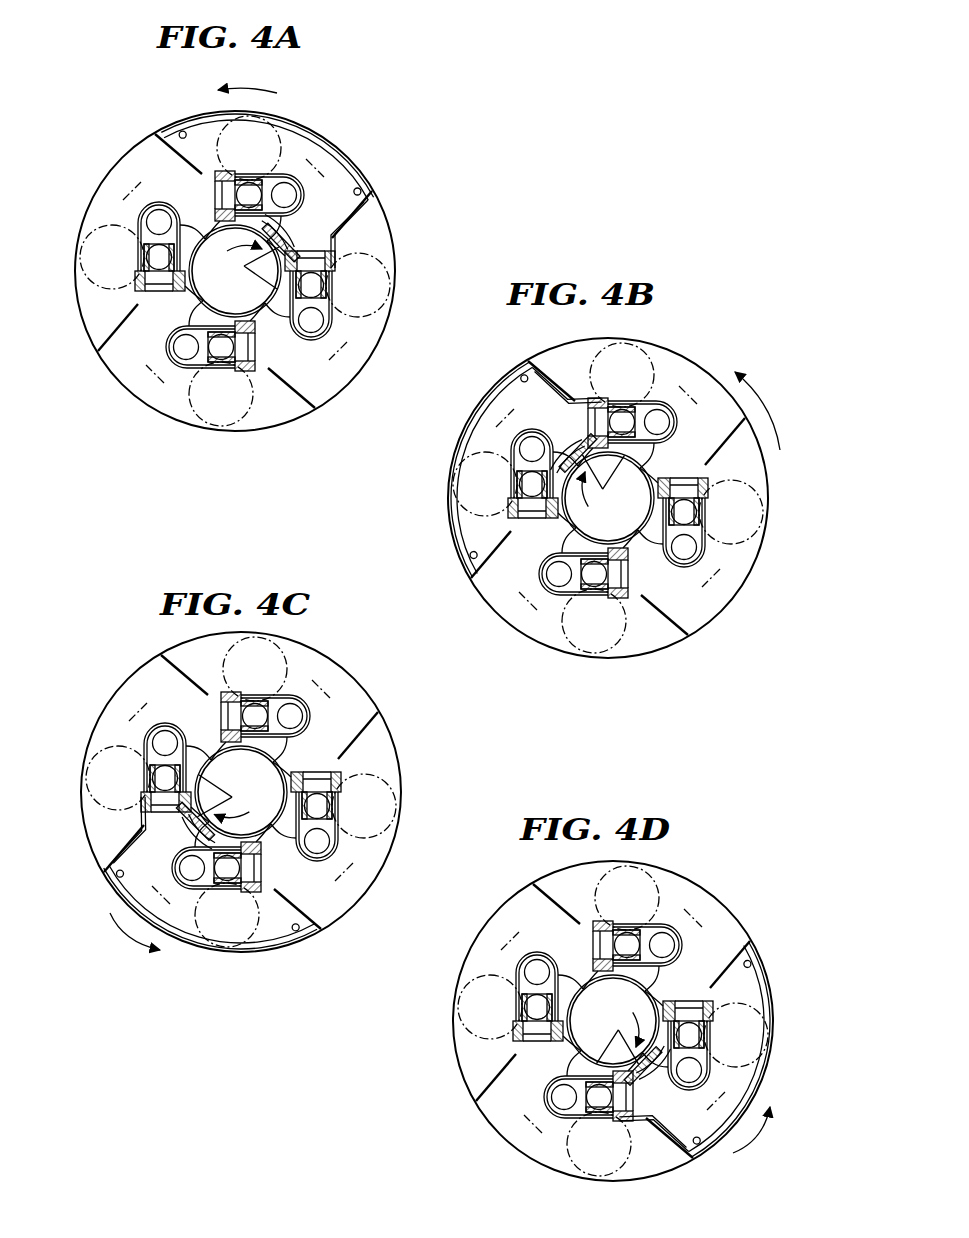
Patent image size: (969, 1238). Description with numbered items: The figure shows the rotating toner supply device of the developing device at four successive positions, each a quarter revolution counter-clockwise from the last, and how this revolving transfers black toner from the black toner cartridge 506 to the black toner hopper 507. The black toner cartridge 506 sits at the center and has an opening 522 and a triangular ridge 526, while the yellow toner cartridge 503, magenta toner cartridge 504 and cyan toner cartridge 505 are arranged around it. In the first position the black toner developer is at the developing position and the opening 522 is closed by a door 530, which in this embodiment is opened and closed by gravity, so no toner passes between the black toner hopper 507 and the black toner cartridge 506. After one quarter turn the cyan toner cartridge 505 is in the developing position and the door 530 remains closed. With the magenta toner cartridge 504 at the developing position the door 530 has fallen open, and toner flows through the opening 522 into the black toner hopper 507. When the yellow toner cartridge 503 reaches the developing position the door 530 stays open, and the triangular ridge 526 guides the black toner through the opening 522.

In FIG. 4A, the yellow toner cartridge 503 is at (228, 271).
In FIG. 4B, the yellow toner cartridge 503 is at (608, 525).
In FIG. 4C, the yellow toner cartridge 503 is at (249, 792).
In FIG. 4D, the yellow toner cartridge 503 is at (613, 1015).
In FIG. 4A, the magenta toner cartridge 504 is at (235, 312).
In FIG. 4B, the magenta toner cartridge 504 is at (654, 498).
In FIG. 4C, the magenta toner cartridge 504 is at (250, 784).
In FIG. 4D, the magenta toner cartridge 504 is at (602, 1006).
In FIG. 4A, the cyan toner cartridge 505 is at (115, 114).
In FIG. 4B, the cyan toner cartridge 505 is at (608, 485).
In FIG. 4C, the cyan toner cartridge 505 is at (217, 792).
In FIG. 4D, the cyan toner cartridge 505 is at (613, 1045).
In FIG. 4A, the black toner cartridge 506 is at (235, 271).
In FIG. 4B, the black toner cartridge 506 is at (608, 498).
In FIG. 4C, the black toner cartridge 506 is at (242, 792).
In FIG. 4D, the black toner cartridge 506 is at (613, 1021).
In FIG. 4A, the black toner hopper 507 is at (267, 132).
In FIG. 4B, the black toner hopper 507 is at (587, 469).
In FIG. 4C, the black toner hopper 507 is at (211, 926).
In FIG. 4D, the black toner hopper 507 is at (759, 1049).
In FIG. 4A, the opening 522 is at (235, 271).
In FIG. 4B, the opening 522 is at (608, 498).
In FIG. 4C, the opening 522 is at (241, 792).
In FIG. 4D, the opening 522 is at (613, 1021).
In FIG. 4A, the triangular ridge 526 is at (235, 271).
In FIG. 4D, the triangular ridge 526 is at (613, 1021).
In FIG. 4A, the door 530 is at (315, 215).
In FIG. 4B, the door 530 is at (560, 419).
In FIG. 4C, the door 530 is at (161, 830).
In FIG. 4D, the door 530 is at (653, 1103).